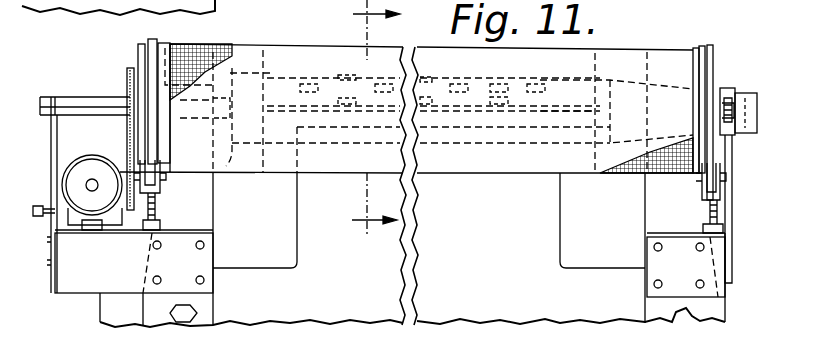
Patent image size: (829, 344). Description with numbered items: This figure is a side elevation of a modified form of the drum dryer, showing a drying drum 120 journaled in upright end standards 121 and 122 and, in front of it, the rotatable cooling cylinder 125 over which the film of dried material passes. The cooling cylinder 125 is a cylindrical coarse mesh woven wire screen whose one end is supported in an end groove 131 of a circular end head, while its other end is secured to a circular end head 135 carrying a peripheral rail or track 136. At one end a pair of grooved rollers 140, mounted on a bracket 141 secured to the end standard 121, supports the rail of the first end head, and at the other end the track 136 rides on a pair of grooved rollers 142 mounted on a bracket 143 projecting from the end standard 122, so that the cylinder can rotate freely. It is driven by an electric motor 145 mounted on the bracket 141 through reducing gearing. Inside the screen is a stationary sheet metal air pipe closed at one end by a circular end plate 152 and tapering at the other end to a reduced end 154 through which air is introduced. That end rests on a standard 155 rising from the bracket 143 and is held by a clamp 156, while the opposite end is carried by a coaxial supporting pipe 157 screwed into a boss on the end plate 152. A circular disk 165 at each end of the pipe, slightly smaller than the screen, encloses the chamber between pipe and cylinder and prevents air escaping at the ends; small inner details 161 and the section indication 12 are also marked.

The section line 12 is at (375, 129).
The drying drum 120 is at (548, 185).
The end standard 121 is at (200, 322).
The end standard 122 is at (668, 318).
The cooling cylinder 125 is at (461, 179).
The end groove 131 is at (172, 43).
The circular end head 135 is at (704, 47).
The peripheral rail or track 136 is at (713, 45).
The grooved rollers 140 is at (152, 181).
The bracket 141 is at (134, 261).
The grooved rollers 142 is at (705, 189).
The bracket 143 is at (686, 265).
The electric motor 145 is at (108, 144).
The circular end plate 152 is at (228, 168).
The reduced end 154 is at (751, 93).
The standard 155 is at (733, 160).
The clamp 156 is at (728, 89).
The coaxial pipe 157 is at (100, 87).
The teeth 161 is at (520, 80).
The circular disk 165 is at (278, 57).